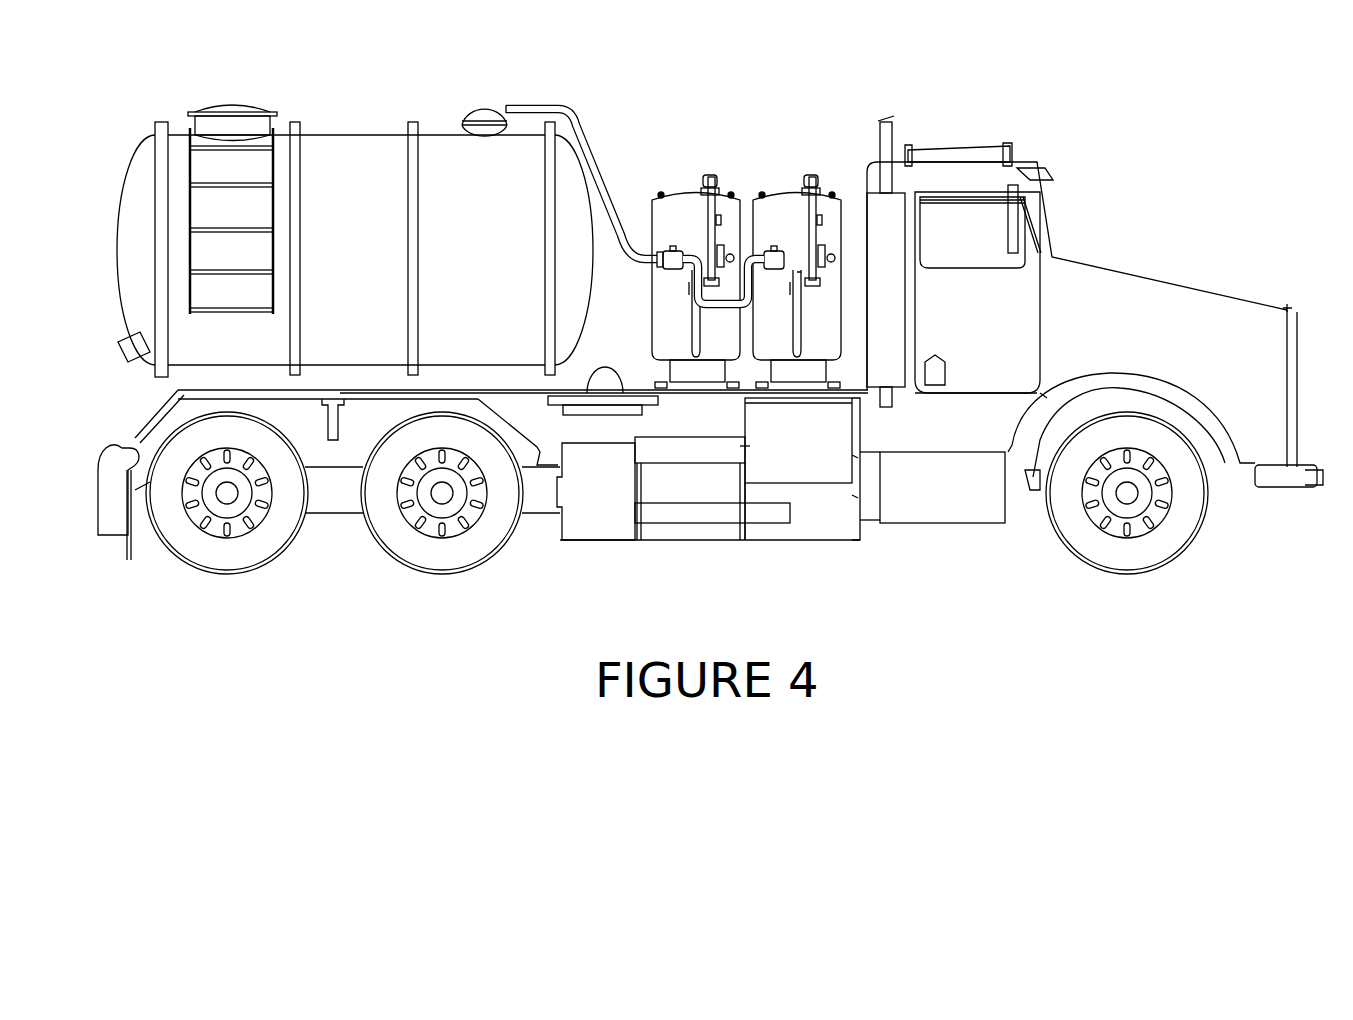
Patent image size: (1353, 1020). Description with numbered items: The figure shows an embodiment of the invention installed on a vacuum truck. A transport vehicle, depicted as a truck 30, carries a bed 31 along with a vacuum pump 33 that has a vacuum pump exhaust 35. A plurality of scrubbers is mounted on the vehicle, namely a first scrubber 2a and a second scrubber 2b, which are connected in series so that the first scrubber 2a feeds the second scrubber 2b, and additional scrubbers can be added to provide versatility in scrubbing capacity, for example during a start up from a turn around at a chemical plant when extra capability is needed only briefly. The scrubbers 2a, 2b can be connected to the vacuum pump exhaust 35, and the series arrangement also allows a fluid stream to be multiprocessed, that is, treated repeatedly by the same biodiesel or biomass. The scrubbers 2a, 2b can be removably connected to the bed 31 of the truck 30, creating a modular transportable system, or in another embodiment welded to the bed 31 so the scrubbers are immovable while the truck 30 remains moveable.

The vacuum pump 33 is at (362, 180).
The vacuum pump exhaust 35 is at (483, 113).
The first scrubber 2a is at (683, 215).
The second scrubber 2b is at (783, 215).
The truck 30 is at (1130, 302).
The bed 31 is at (587, 393).